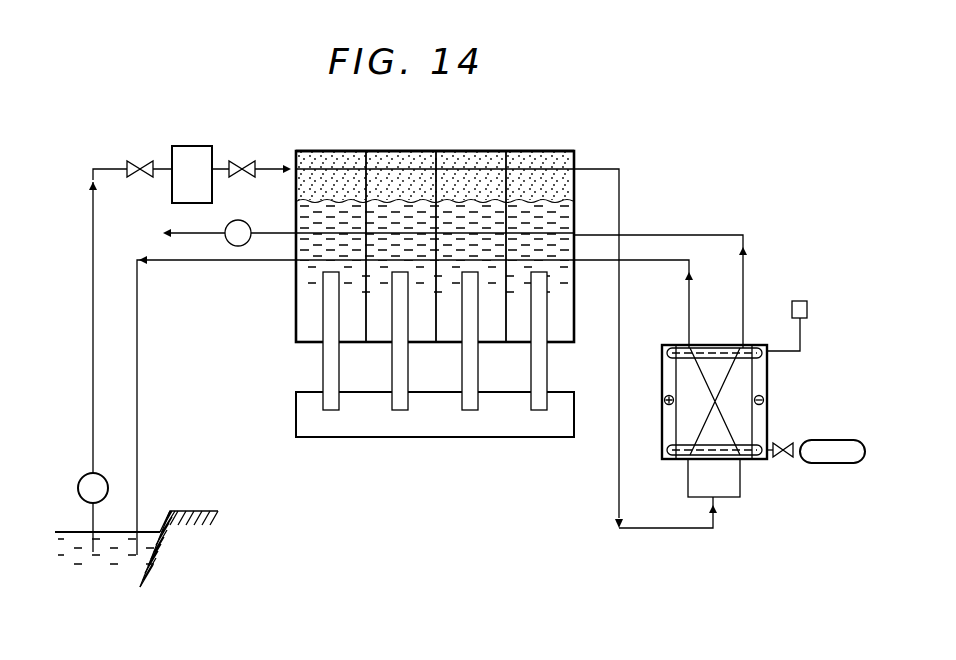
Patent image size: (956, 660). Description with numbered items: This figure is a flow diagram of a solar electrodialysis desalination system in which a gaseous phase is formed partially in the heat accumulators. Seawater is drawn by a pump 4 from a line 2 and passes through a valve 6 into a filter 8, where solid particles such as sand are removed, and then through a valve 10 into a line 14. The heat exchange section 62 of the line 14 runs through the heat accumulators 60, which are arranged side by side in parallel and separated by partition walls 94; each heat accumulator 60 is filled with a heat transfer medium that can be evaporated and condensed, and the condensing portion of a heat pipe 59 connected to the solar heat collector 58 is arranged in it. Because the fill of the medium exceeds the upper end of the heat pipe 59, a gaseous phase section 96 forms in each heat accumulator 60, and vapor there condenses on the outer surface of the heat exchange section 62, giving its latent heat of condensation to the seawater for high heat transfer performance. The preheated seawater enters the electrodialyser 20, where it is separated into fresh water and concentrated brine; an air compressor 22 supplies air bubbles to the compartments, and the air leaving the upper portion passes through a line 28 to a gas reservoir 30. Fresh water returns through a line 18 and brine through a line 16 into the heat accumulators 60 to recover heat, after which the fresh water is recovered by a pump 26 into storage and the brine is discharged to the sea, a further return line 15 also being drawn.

The line 2 is at (94, 512).
The pump 4 is at (100, 477).
The valve 6 is at (136, 160).
The filter 8 is at (190, 146).
The valve 10 is at (238, 160).
The line 14 is at (276, 168).
The return line 15 is at (668, 529).
The line 16 is at (180, 262).
The line 18 is at (648, 234).
The electrodialyser 20 is at (756, 345).
The air compressor 22 is at (838, 438).
The pump 26 is at (246, 222).
The line 28 is at (801, 340).
The gas reservoir 30 is at (808, 306).
The heat collector 58 is at (506, 438).
The heat pipe 59 is at (549, 360).
The heat accumulator 60 is at (454, 232).
The heat exchange section 62 is at (316, 168).
The partition wall 94 is at (506, 232).
The gaseous phase section 96 is at (545, 158).